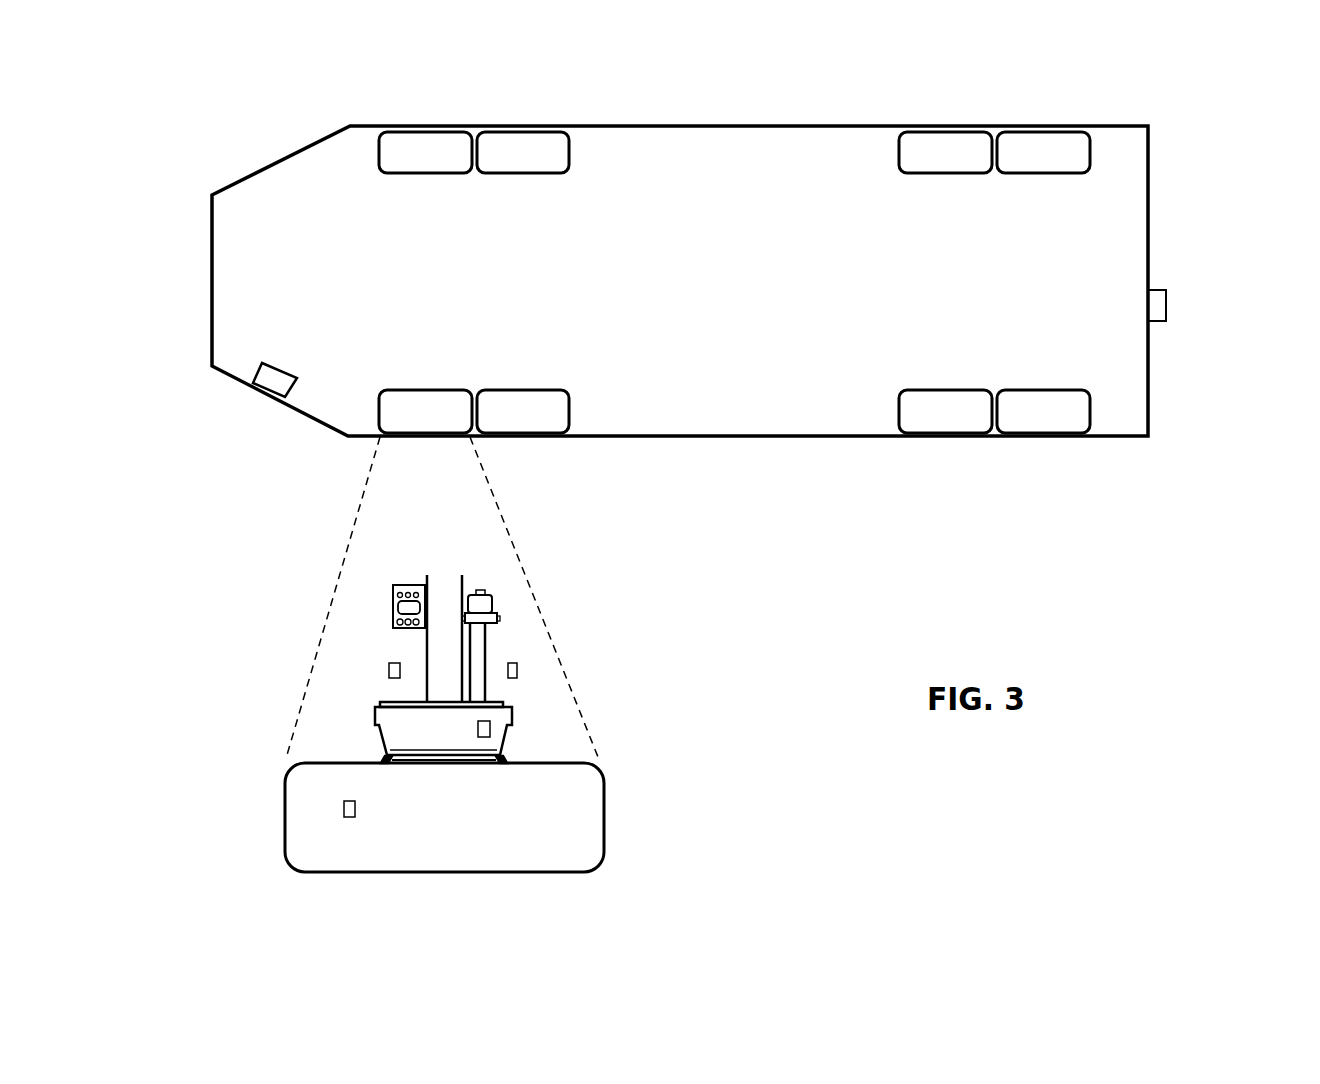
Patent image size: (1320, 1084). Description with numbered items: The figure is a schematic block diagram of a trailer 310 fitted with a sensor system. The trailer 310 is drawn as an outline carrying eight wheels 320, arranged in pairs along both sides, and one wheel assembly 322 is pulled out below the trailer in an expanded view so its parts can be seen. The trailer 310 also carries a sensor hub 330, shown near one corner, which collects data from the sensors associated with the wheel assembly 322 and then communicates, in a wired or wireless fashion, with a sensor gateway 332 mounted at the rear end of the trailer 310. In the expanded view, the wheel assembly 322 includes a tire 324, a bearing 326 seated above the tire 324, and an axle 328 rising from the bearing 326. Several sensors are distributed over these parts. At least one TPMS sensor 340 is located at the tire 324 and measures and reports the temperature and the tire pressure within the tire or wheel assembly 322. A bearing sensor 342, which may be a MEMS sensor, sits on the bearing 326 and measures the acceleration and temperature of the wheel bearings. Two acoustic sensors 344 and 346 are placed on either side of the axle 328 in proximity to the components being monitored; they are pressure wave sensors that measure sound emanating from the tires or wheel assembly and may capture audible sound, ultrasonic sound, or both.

The trailer 310 is at (695, 311).
The wheels 320 is at (482, 198).
The wheel assembly 322 is at (630, 808).
The tire 324 is at (310, 862).
The bearing 326 is at (378, 738).
The axle 328 is at (448, 602).
The sensor hub 330 is at (270, 388).
The sensor gateway 332 is at (1155, 323).
The TPMS sensor 340 is at (343, 810).
The bearing sensor 342 is at (493, 728).
The acoustic sensor 344 is at (389, 670).
The acoustic sensor 346 is at (518, 670).